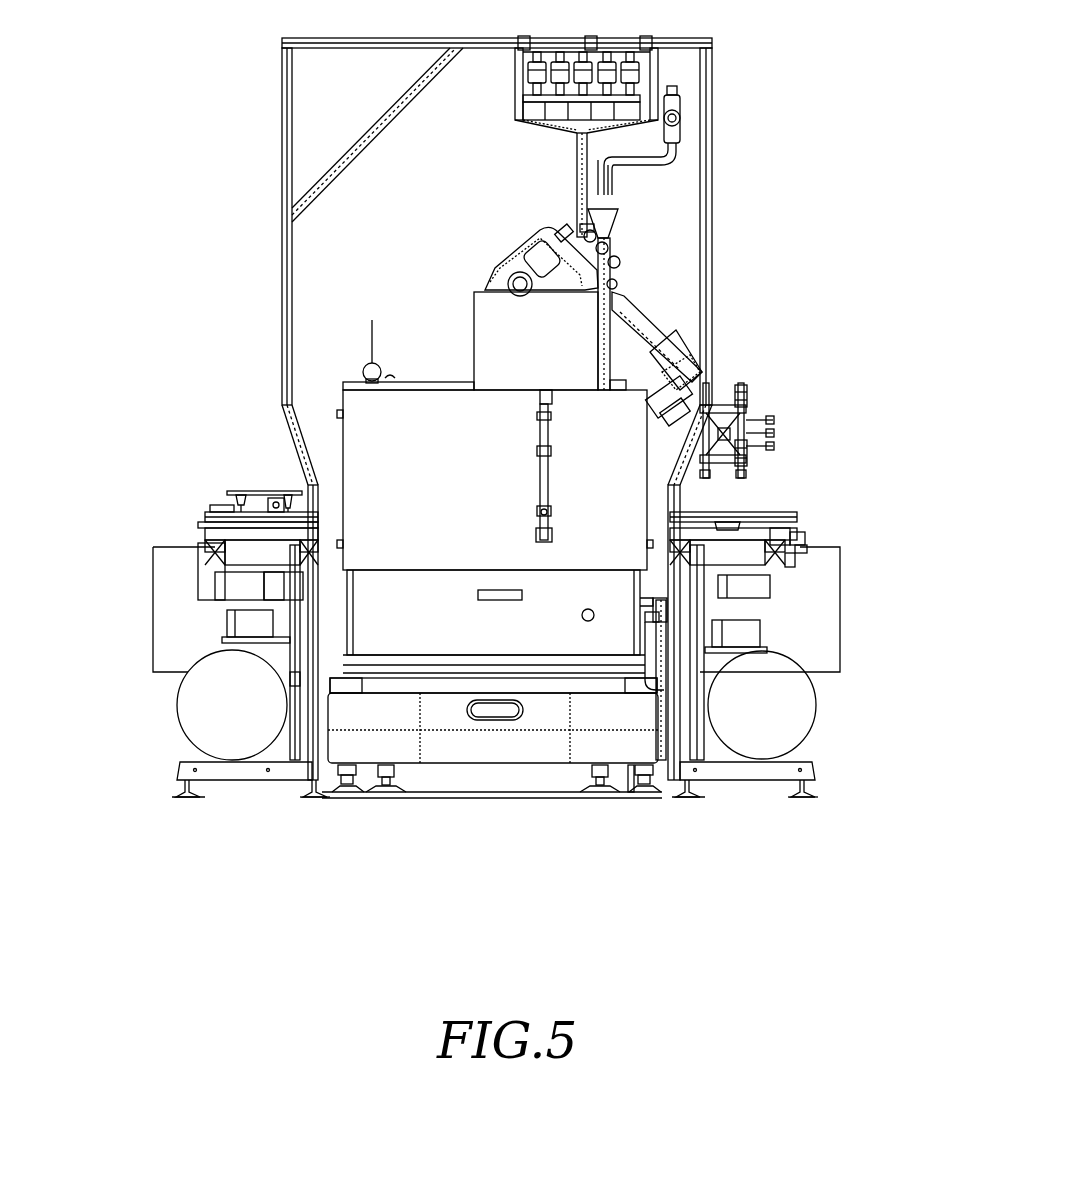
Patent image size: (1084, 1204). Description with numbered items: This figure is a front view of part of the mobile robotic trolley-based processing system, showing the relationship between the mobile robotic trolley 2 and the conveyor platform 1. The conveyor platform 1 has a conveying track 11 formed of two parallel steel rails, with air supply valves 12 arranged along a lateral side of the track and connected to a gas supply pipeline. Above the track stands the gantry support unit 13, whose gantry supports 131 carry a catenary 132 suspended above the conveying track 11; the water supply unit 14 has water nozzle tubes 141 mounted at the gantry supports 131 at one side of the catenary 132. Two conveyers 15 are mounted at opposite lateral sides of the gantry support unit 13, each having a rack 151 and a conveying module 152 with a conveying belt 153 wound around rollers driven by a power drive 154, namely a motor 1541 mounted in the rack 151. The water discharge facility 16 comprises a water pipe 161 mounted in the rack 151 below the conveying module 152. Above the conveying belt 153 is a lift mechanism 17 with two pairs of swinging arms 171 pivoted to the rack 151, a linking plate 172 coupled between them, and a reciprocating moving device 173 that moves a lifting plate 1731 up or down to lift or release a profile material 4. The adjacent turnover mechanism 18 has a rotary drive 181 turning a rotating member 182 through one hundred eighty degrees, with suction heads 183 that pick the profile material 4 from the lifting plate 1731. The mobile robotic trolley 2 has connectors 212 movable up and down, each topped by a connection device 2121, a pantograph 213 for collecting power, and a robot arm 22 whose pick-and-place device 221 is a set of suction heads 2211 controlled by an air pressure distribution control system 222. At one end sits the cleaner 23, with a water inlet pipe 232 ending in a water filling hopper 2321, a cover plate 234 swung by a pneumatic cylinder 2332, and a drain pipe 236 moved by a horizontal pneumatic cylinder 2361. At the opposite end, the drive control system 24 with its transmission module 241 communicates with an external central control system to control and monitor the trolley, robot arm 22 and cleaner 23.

The conveyor platform 1 is at (433, 802).
The mobile robotic trolley 2 is at (232, 372).
The profile material 4 is at (238, 491).
The conveying track 11 is at (386, 795).
The air supply valve 12 is at (348, 792).
The gantry support unit 13 is at (722, 42).
The gantry support 131 is at (712, 73).
The catenary 132 is at (533, 88).
The water supply unit 14 is at (688, 118).
The water nozzle tube 141 is at (607, 178).
The conveyer 15 is at (118, 706).
The rack 151 is at (185, 625).
The conveying module 152 is at (210, 563).
The conveying belt 153 is at (232, 527).
The power drive 154 is at (240, 598).
The motor 1541 is at (240, 580).
The water discharge facility 16 is at (815, 690).
The water pipe 161 is at (675, 645).
The lift mechanism 17 is at (855, 470).
The swinging arm 171 is at (795, 535).
The linking plate 172 is at (800, 540).
The reciprocating moving device 173 is at (800, 548).
The lifting plate 1731 is at (790, 535).
The turnover mechanism 18 is at (160, 478).
The rotary drive 181 is at (288, 495).
The rotating member 182 is at (274, 500).
The suction head 183 is at (238, 506).
The connector 212 is at (637, 775).
The connection device 2121 is at (650, 690).
The pantograph 213 is at (578, 172).
The robot arm 22 is at (520, 243).
The pick-and-place device 221 is at (758, 405).
The suction head 2211 is at (740, 383).
The air pressure distribution control system 222 is at (616, 252).
The cleaner 23 is at (356, 405).
The water inlet pipe 232 is at (608, 288).
The water filling hopper 2321 is at (614, 222).
The pneumatic cylinder 2332 is at (540, 480).
The cover plate 234 is at (474, 320).
The drain pipe 236 is at (660, 600).
The pneumatic cylinder 2361 is at (655, 615).
The drive control system 24 is at (420, 382).
The transmission module 241 is at (368, 366).